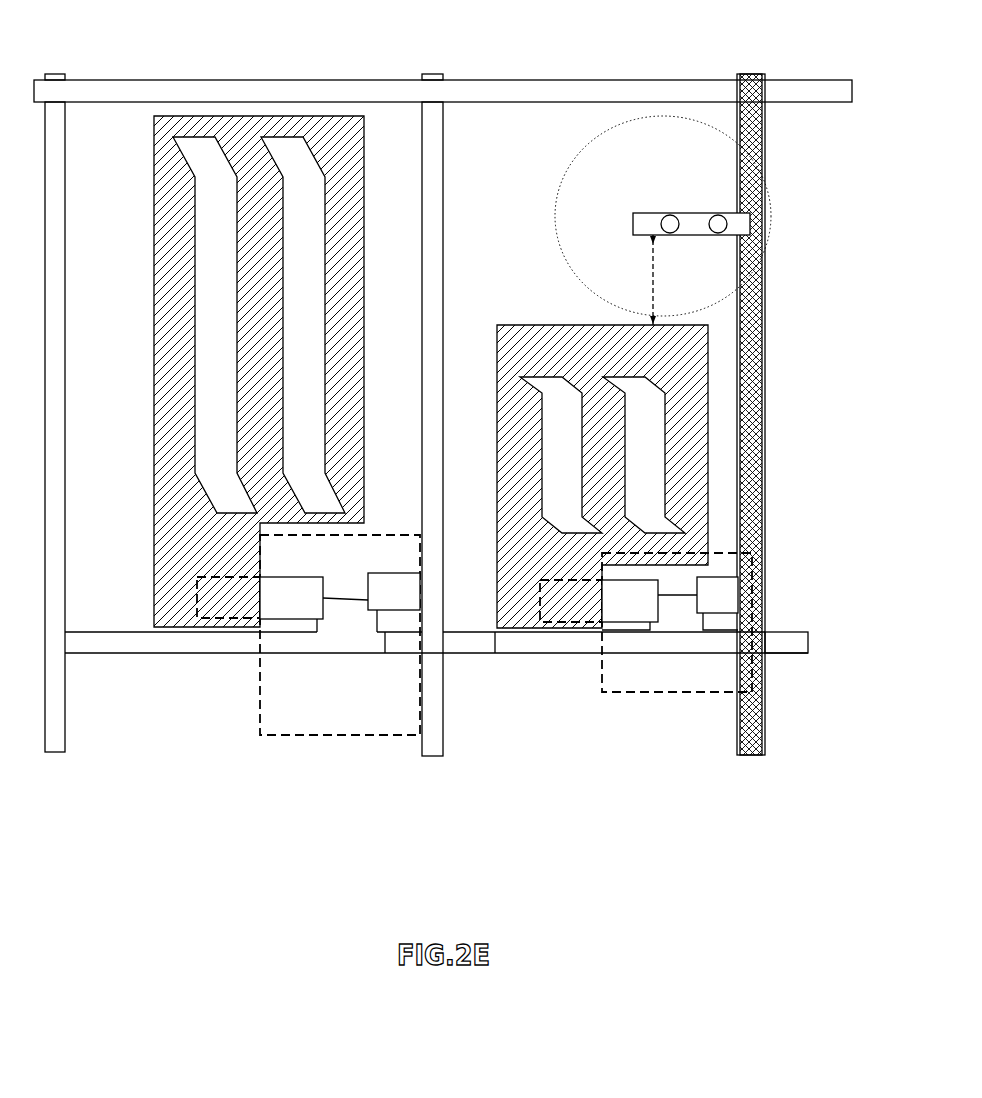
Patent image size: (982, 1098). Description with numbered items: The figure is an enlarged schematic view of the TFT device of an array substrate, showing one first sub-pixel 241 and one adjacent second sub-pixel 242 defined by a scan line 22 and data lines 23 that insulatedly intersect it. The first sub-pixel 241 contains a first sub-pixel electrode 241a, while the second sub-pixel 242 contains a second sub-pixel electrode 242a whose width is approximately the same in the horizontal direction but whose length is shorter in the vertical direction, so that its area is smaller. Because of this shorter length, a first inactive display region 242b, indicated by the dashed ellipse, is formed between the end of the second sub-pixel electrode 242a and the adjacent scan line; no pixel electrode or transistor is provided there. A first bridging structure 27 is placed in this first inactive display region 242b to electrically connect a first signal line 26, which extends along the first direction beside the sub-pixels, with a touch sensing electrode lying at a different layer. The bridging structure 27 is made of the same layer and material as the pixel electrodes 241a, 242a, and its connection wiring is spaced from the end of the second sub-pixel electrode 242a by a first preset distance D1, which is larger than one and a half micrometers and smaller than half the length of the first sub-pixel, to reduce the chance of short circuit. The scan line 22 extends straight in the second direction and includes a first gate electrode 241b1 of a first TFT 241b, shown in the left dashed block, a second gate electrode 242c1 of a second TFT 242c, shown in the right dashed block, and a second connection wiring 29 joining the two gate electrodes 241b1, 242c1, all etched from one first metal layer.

The scan line 22 is at (436, 687).
The data line 23 is at (422, 220).
The first signal line 26 is at (742, 102).
The first bridging structure 27 is at (682, 213).
The second connection wiring 29 is at (470, 642).
The first sub-pixel 241 is at (127, 145).
The first sub-pixel electrode 241a is at (177, 147).
The first thin film transistor 241b is at (294, 666).
The first gate electrode 241b1 is at (345, 633).
The second sub-pixel 242 is at (460, 150).
The second sub-pixel electrode 242a is at (557, 357).
The first inactive display region 242b is at (590, 180).
The second thin film transistor 242c is at (645, 675).
The second gate electrode 242c1 is at (680, 632).
The first preset distance D1 is at (670, 280).